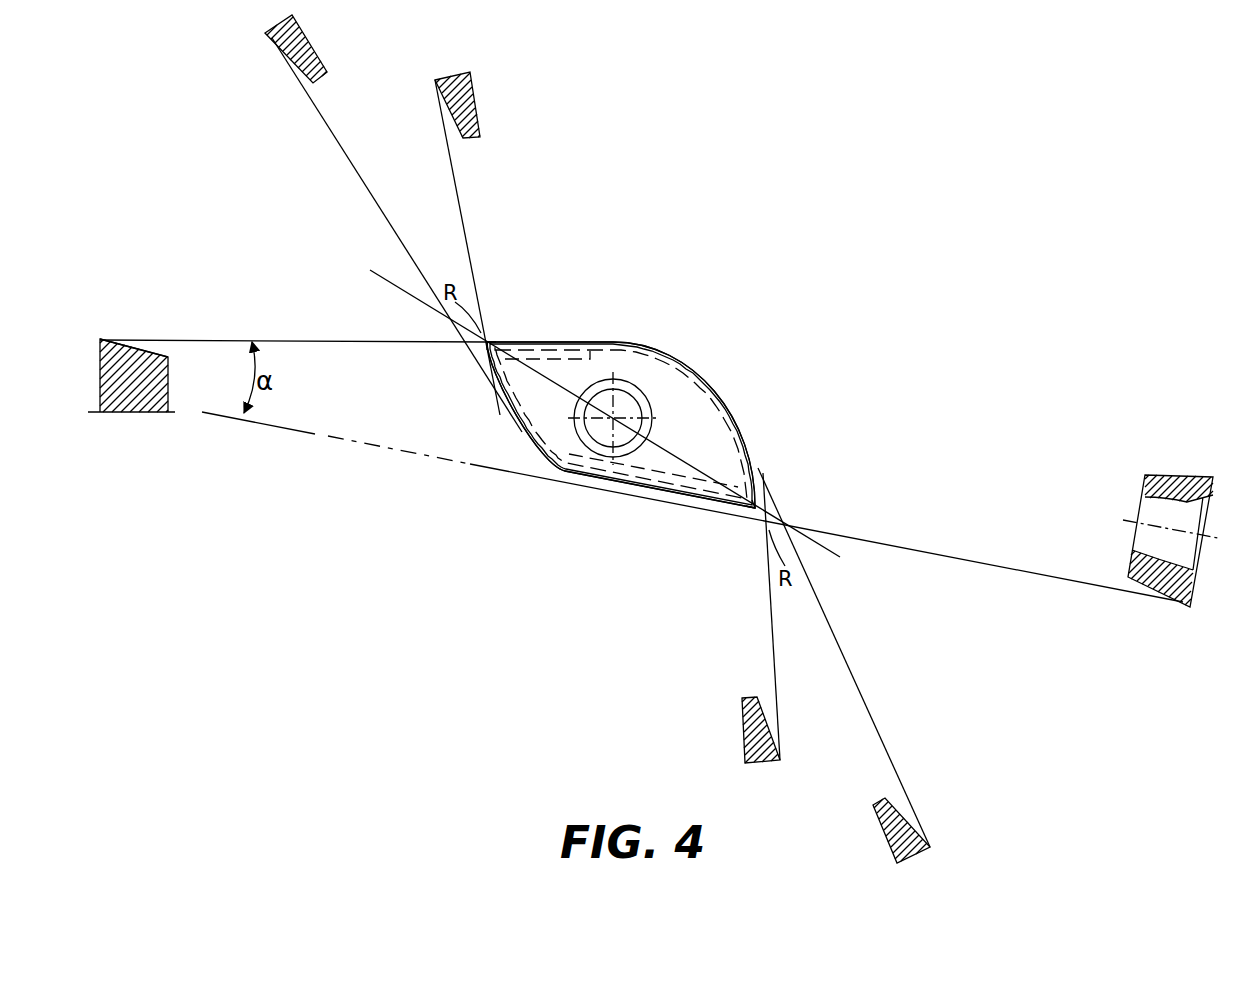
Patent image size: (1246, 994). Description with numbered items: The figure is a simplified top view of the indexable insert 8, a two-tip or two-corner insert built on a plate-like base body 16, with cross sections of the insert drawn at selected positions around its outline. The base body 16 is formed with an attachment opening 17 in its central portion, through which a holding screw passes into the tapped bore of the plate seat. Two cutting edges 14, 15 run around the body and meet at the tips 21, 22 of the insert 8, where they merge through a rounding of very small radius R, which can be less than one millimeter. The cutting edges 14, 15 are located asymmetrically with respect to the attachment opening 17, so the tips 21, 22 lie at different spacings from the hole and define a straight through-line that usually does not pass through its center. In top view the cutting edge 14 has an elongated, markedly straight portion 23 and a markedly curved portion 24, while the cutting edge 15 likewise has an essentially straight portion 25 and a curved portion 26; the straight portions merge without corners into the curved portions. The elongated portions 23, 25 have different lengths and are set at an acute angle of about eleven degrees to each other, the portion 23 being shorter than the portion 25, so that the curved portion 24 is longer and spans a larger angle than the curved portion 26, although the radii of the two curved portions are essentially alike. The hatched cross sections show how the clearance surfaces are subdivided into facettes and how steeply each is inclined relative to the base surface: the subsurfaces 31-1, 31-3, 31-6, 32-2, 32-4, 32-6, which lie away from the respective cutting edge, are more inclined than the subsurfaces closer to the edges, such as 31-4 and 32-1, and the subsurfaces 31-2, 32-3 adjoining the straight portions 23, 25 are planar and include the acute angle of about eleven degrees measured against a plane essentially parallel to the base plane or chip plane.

The cutting edge 14 is at (575, 336).
The cutting edge 15 is at (583, 488).
The base body 16 is at (670, 452).
The attachment opening 17 is at (640, 405).
The tip 21 is at (800, 507).
The tip 22 is at (474, 367).
The elongated portion 23 is at (531, 339).
The curved portion 24 is at (735, 408).
The elongated portion 25 is at (731, 503).
The curved portion 26 is at (518, 434).
The insert 8 is at (398, 289).
The facette 31-1 is at (158, 355).
The facette 31-2 is at (118, 340).
The facette 31-3 is at (900, 806).
The facette 31-4 is at (780, 751).
The facette 31-6 is at (770, 703).
The facette 32-1 is at (276, 46).
The facette 32-2 is at (317, 85).
The facette 32-3 is at (1182, 606).
The facette 32-4 is at (1133, 581).
The facette 32-6 is at (460, 139).